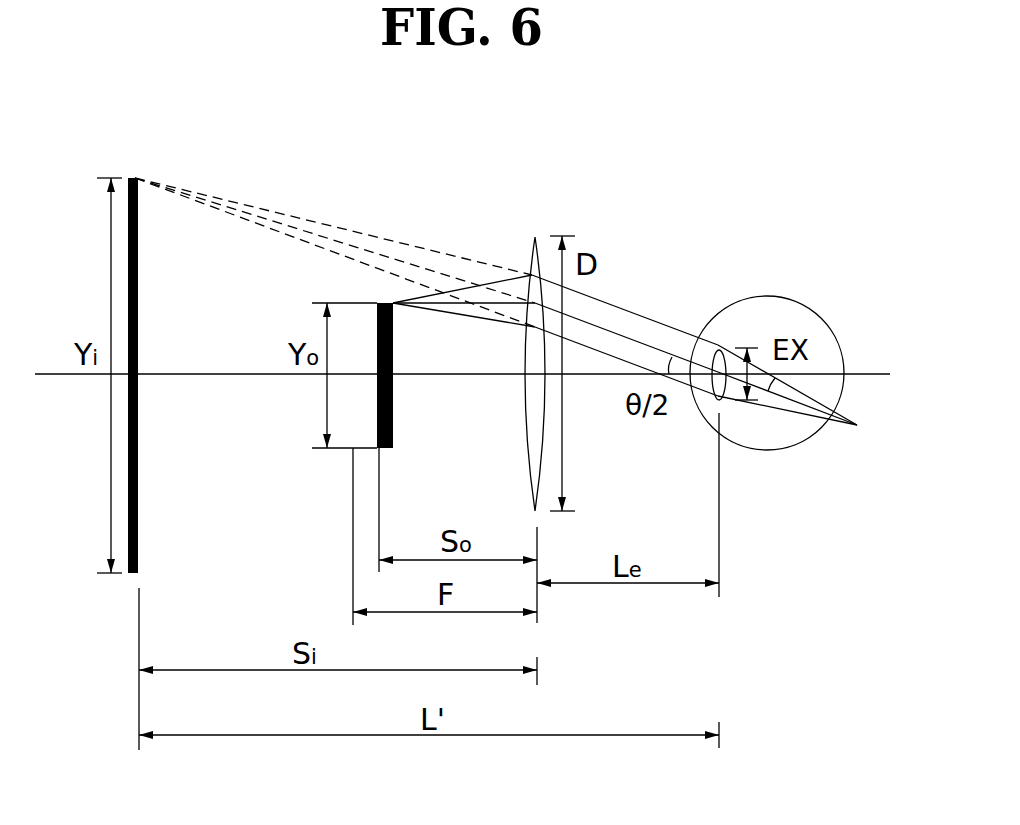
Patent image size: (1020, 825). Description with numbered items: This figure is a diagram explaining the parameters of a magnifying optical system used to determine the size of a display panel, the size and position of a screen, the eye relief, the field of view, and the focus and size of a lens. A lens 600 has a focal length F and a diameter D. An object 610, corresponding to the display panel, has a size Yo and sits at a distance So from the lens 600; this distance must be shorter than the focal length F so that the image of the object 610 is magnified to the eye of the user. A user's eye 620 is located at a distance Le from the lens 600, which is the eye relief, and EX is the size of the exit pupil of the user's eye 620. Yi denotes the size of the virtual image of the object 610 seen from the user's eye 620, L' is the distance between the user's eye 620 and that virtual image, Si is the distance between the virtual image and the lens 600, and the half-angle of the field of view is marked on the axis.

The lens 600 is at (533, 237).
The object 610 is at (393, 416).
The user's eye 620 is at (766, 296).